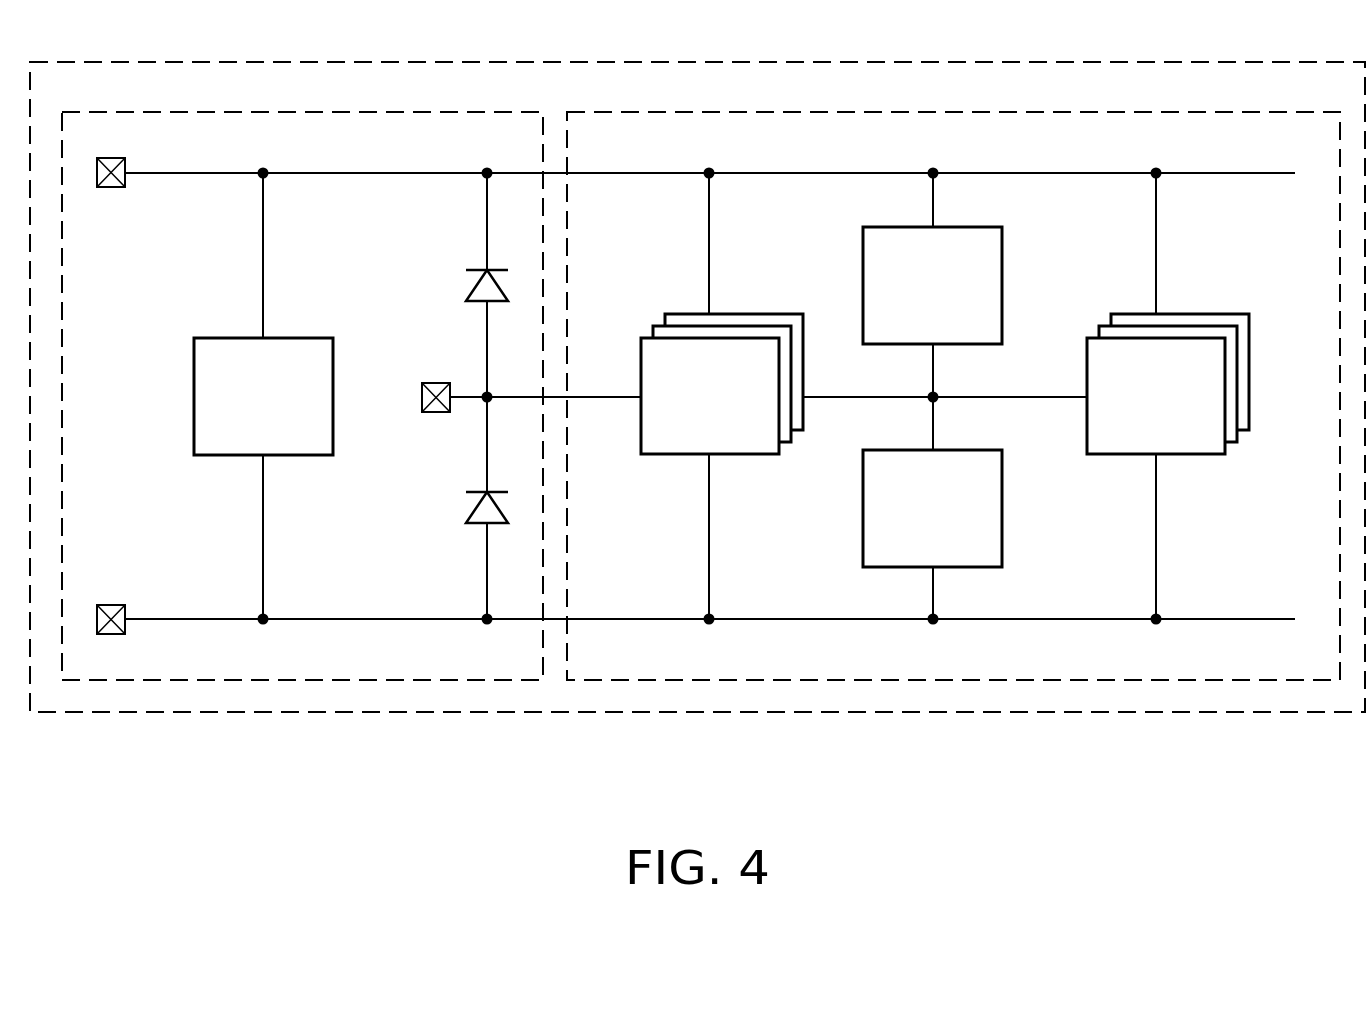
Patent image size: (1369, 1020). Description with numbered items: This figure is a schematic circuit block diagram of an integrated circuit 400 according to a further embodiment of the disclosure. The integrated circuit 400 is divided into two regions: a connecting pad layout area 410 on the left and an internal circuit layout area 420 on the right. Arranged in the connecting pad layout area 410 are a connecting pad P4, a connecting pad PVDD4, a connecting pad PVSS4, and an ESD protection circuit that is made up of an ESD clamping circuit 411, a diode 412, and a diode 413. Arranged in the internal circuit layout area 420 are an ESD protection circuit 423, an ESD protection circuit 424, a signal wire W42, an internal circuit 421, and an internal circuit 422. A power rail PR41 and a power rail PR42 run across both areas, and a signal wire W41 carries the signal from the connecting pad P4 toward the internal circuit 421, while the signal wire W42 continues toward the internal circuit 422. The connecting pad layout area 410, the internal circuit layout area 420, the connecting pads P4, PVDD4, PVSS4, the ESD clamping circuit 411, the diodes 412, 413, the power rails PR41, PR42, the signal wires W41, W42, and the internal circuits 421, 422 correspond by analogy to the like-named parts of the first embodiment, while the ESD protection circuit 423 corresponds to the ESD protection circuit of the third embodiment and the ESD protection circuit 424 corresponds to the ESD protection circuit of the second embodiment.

The integrated circuit 400 is at (727, 712).
The connecting pad layout area 410 is at (331, 680).
The internal circuit layout area 420 is at (1040, 680).
The ESD clamping circuit 411 is at (194, 398).
The diode 412 is at (474, 284).
The diode 413 is at (474, 506).
The internal circuit 421 is at (687, 457).
The internal circuit 422 is at (1132, 457).
The ESD protection circuit 423 is at (862, 298).
The ESD protection circuit 424 is at (862, 497).
The power rail PR41 is at (769, 173).
The power rail PR42 is at (769, 619).
The signal wire W41 is at (607, 395).
The signal wire W42 is at (1053, 395).
The connecting pad P4 is at (436, 417).
The connecting pad PVDD4 is at (111, 193).
The connecting pad PVSS4 is at (111, 639).